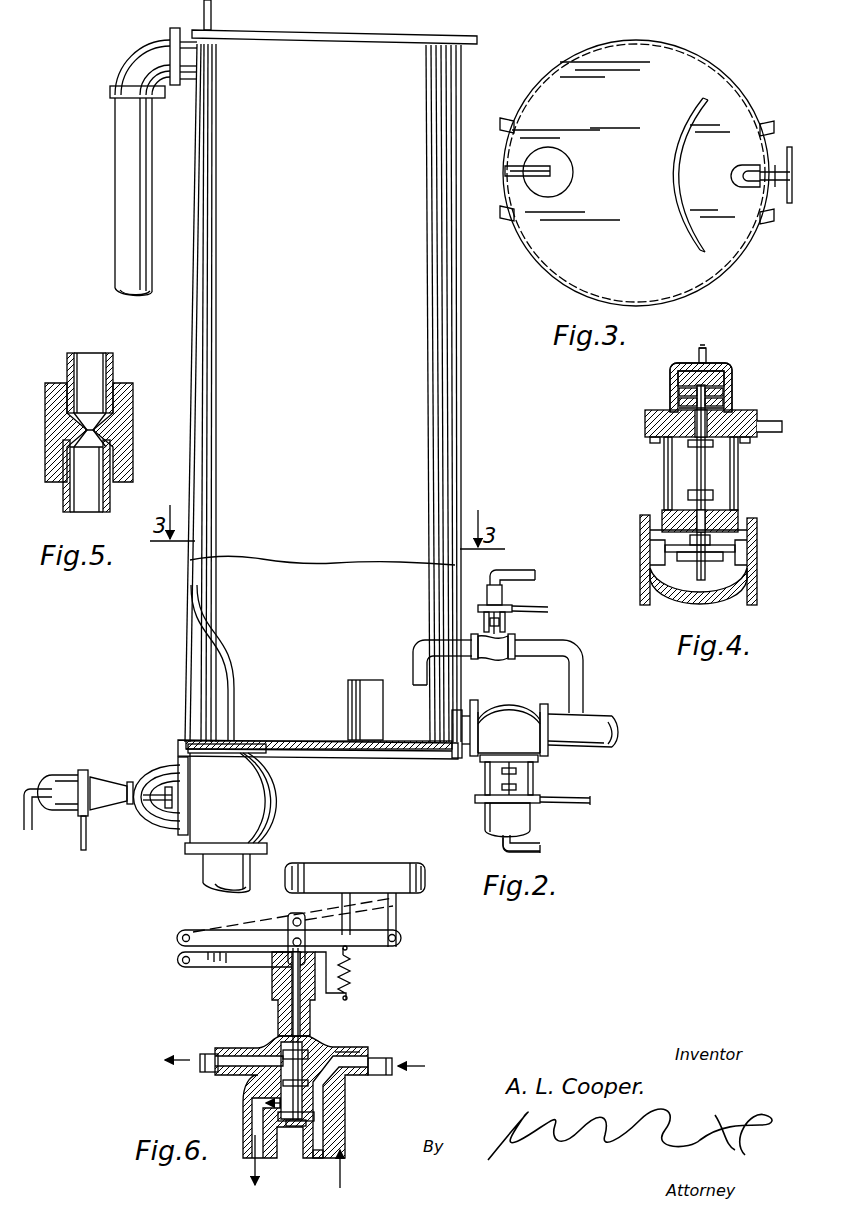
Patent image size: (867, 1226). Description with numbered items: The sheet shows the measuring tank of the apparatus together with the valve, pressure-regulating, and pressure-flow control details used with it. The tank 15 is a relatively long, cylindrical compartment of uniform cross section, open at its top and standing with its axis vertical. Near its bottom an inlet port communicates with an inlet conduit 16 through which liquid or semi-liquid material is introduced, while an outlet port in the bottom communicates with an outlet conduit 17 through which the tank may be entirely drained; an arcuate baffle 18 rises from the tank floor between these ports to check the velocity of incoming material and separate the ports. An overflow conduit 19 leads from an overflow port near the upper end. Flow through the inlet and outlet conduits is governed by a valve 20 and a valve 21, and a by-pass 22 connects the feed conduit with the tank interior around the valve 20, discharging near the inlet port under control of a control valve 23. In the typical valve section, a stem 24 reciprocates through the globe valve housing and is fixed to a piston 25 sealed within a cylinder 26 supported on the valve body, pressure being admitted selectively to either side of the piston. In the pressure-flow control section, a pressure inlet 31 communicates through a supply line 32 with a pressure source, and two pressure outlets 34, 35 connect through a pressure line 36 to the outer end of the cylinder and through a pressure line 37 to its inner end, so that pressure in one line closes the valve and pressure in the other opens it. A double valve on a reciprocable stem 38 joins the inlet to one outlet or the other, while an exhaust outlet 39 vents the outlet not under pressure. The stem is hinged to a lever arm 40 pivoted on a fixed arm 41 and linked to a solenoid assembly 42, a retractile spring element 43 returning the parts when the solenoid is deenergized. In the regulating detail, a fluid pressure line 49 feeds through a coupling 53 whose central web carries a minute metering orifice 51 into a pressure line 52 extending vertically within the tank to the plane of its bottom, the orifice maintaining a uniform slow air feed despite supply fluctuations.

In FIG. 2, the tank 15 is at (327, 394).
In FIG. 3, the tank 15 is at (596, 52).
In FIG. 2, the inlet conduit 16 is at (598, 746).
In FIG. 2, the outlet conduit 17 is at (206, 877).
In FIG. 2, the baffle 18 is at (348, 702).
In FIG. 3, the baffle 18 is at (670, 155).
In FIG. 2, the overflow conduit 19 is at (128, 181).
In FIG. 2, the valve 20 is at (500, 729).
In FIG. 2, the valve 21 is at (227, 799).
In FIG. 2, the by-pass 22 is at (583, 677).
In FIG. 2, the control valve 23 is at (492, 660).
In FIG. 2, the stem 24 is at (500, 626).
In FIG. 4, the stem 24 is at (698, 472).
In FIG. 4, the piston 25 is at (725, 390).
In FIG. 2, the cylinder 26 is at (503, 596).
In FIG. 4, the cylinder 26 is at (670, 382).
In FIG. 6, the pressure inlet 31 is at (330, 1129).
In FIG. 6, the supply line 32 is at (325, 1168).
In FIG. 6, the pressure outlet 34 is at (237, 1056).
In FIG. 6, the pressure outlet 35 is at (355, 1052).
In FIG. 2, the pressure line 36 is at (530, 850).
In FIG. 6, the pressure line 36 is at (209, 1055).
In FIG. 2, the pressure line 37 is at (590, 804).
In FIG. 6, the pressure line 37 is at (394, 1054).
In FIG. 6, the reciprocable stem 38 is at (274, 998).
In FIG. 6, the exhaust outlet 39 is at (253, 1119).
In FIG. 6, the lever arm 40 is at (264, 937).
In FIG. 6, the fixed arm 41 is at (200, 969).
In FIG. 6, the solenoid assembly 42 is at (355, 878).
In FIG. 6, the retractile spring element 43 is at (350, 983).
In FIG. 5, the fluid pressure line 49 is at (64, 504).
In FIG. 5, the metering orifice 51 is at (95, 432).
In FIG. 2, the pressure line 52 is at (212, 17).
In FIG. 5, the pressure line 52 is at (67, 362).
In FIG. 5, the coupling 53 is at (128, 408).